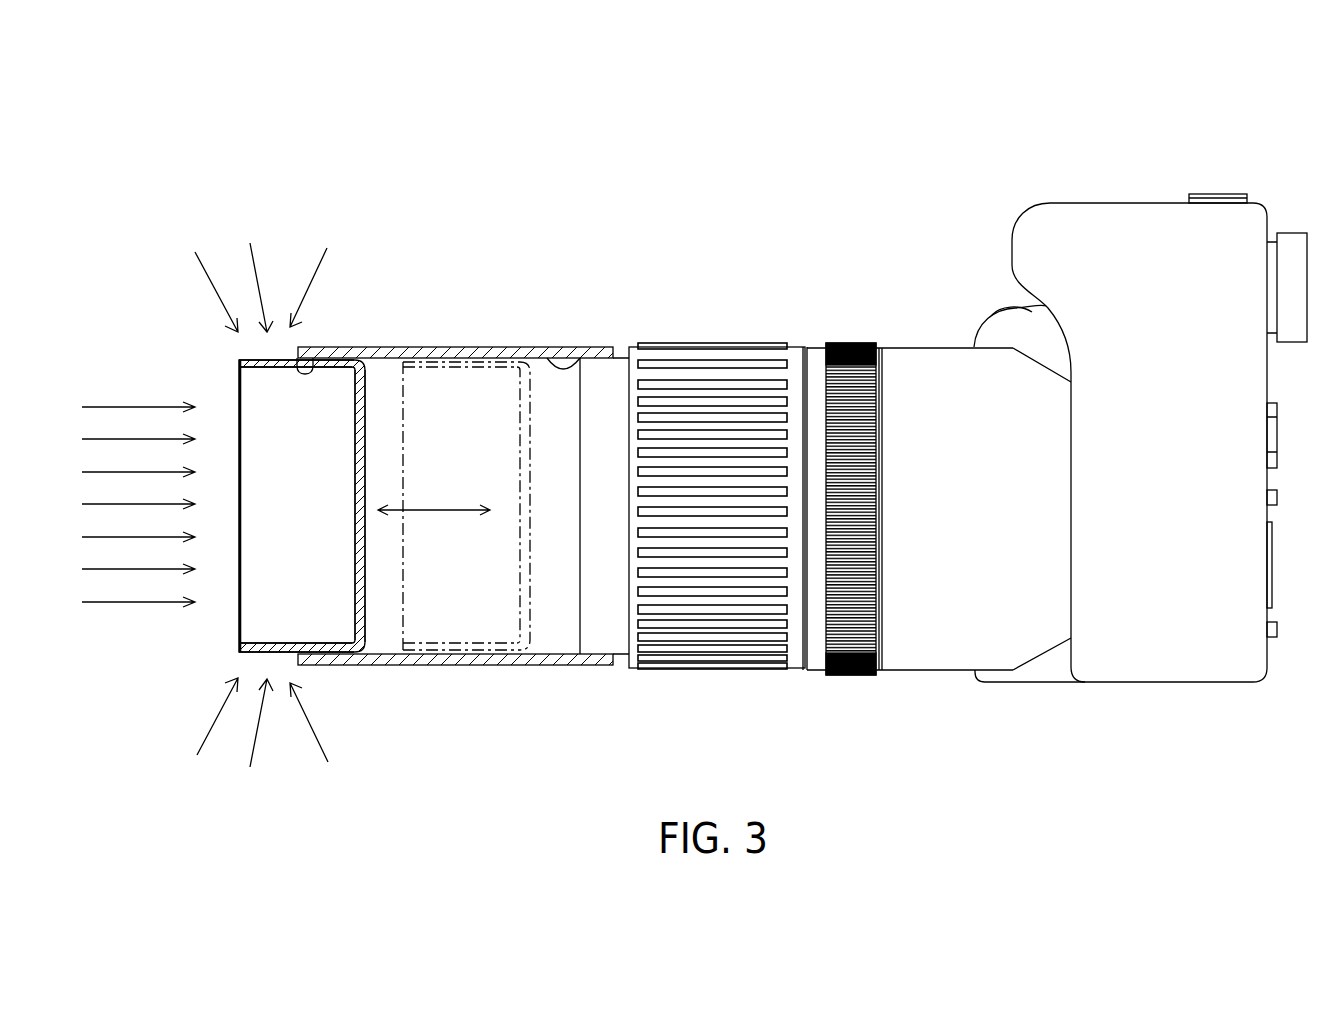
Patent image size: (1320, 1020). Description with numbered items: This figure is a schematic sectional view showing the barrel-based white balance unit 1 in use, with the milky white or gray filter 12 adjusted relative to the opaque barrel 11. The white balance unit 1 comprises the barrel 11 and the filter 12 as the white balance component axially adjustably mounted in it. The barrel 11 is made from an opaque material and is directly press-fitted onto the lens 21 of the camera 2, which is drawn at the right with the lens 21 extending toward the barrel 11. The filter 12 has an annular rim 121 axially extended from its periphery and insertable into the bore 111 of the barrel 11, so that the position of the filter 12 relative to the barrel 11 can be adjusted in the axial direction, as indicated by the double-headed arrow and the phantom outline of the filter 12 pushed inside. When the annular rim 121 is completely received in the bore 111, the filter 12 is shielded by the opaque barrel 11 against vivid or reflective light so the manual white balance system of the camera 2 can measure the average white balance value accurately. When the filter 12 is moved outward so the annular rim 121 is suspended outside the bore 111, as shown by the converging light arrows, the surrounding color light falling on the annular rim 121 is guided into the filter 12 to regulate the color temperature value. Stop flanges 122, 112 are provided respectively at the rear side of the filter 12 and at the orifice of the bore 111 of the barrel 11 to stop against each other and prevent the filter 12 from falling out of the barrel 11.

The white balance unit 1 is at (409, 188).
The camera 2 is at (1167, 298).
The barrel 11 is at (538, 353).
The milky white or gray filter 12 is at (357, 543).
The lens 21 is at (779, 362).
The bore 111 is at (578, 355).
The stop flange 112 is at (305, 366).
The annular rim 121 is at (270, 358).
The stop flange 122 is at (350, 346).